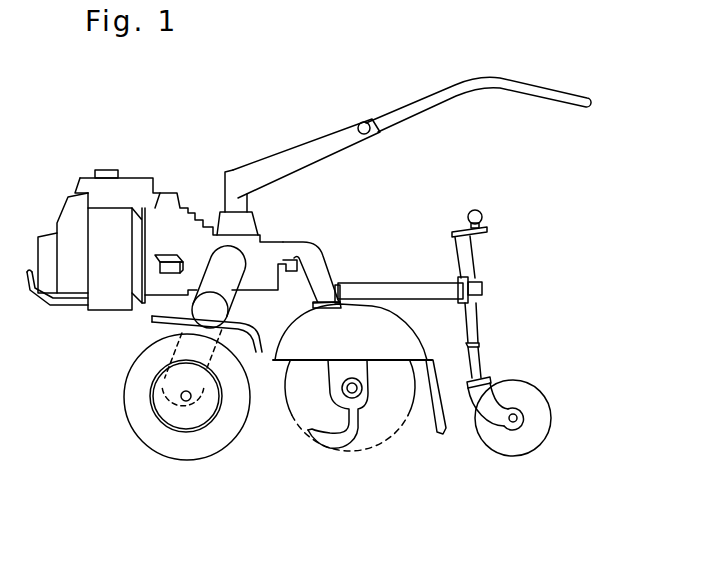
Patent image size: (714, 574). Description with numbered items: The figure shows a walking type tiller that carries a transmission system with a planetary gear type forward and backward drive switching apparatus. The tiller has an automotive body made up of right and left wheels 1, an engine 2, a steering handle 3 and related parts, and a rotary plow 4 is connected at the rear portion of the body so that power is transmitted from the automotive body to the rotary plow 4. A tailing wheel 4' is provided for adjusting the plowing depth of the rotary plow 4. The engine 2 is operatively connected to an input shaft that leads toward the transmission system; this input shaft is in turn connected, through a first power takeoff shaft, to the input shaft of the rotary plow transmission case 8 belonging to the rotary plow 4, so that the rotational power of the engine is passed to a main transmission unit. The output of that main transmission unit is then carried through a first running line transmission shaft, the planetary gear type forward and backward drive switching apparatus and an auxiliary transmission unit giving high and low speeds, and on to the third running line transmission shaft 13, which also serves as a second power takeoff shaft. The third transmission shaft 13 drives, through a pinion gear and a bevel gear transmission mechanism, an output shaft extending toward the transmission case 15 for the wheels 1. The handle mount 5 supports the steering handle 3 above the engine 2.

The wheels 1 is at (198, 448).
The engine 2 is at (111, 281).
The steering handle 3 is at (463, 92).
The rotary plow 4 is at (350, 434).
The tailing wheel 4' is at (507, 333).
The handle mount 5 is at (197, 214).
The rotary plow transmission case 8 is at (318, 282).
The third running line transmission shaft 13 is at (295, 258).
The transmission case 15 is at (172, 408).